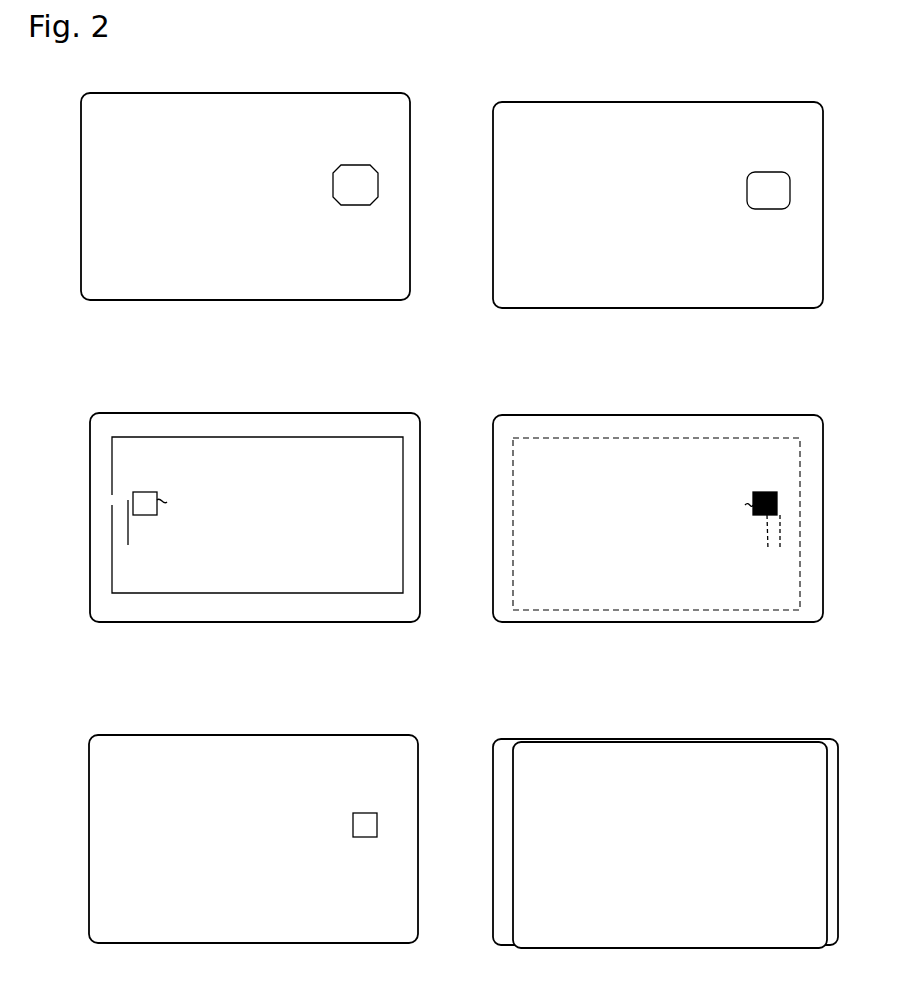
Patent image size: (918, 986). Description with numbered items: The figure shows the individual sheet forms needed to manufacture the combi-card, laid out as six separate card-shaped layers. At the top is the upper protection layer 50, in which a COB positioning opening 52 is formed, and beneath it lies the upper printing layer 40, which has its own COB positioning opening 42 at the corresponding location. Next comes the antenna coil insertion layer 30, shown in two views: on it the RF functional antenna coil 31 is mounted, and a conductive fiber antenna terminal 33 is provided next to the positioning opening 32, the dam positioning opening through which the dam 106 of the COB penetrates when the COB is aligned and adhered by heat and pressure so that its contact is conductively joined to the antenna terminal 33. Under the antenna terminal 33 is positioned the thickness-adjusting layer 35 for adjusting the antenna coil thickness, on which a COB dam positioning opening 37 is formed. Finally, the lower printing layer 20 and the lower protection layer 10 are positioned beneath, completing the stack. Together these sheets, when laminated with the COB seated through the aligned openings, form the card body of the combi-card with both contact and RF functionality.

The lower protection layer 10 is at (506, 741).
The lower printing layer 20 is at (527, 748).
The antenna coil insertion layer 30 is at (162, 490).
The antenna coil 31 is at (408, 468).
The positioning opening 32 is at (131, 501).
The antenna terminal 33 is at (165, 502).
The thickness-adjusting layer 35 is at (173, 772).
The COB dam positioning opening 37 is at (354, 825).
The upper printing layer 40 is at (578, 134).
The COB positioning opening formed on upper printing layer 42 is at (786, 180).
The upper protection layer 50 is at (165, 128).
The COB positioning opening formed on upper protection layer 52 is at (372, 172).
The dam of the COB 106 is at (763, 547).